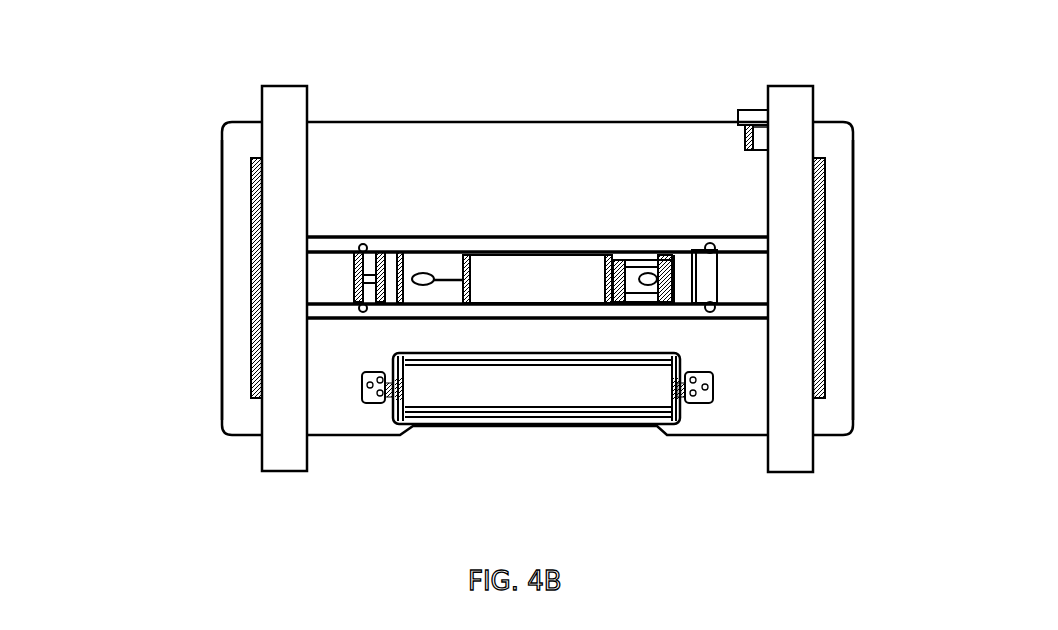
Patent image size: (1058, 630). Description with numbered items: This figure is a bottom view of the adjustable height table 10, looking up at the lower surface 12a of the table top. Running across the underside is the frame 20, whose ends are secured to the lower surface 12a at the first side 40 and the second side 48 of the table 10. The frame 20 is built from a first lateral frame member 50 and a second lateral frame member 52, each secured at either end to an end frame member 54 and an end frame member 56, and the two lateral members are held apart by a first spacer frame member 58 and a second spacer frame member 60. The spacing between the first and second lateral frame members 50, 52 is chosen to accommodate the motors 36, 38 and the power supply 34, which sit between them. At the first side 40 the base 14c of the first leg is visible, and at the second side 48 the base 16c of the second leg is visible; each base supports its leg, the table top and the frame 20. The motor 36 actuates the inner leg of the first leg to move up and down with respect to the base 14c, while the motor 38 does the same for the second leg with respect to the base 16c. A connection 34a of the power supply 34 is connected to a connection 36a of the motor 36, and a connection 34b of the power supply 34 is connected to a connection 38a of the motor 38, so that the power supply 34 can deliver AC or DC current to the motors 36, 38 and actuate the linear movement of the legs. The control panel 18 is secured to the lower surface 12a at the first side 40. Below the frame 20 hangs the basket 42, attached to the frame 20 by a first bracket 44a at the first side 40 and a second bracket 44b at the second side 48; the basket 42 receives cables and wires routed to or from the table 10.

The table 10 is at (536, 274).
The lower surface of the table top 12a is at (610, 158).
The base of the first leg 14c is at (797, 99).
The base of the second leg 16c is at (285, 105).
The control panel 18 is at (761, 118).
The frame 20 is at (485, 228).
The power supply 34 is at (515, 281).
The connection of the power supply 34a is at (637, 280).
The connection of the power supply 34b is at (455, 281).
The motor 36 is at (735, 277).
The connection of the motor 36a is at (667, 292).
The motor 38 is at (335, 273).
The connection of the motor 38a is at (412, 282).
The first side of the table 40 is at (888, 265).
The basket 42 is at (567, 382).
The first bracket 44a is at (700, 393).
The second bracket 44b is at (378, 397).
The second side of the table 48 is at (172, 260).
The first lateral frame member 50 is at (557, 245).
The second lateral frame member 52 is at (747, 318).
The end frame member 54 is at (813, 353).
The end frame member 56 is at (257, 190).
The first spacer frame member 58 is at (687, 273).
The second spacer frame member 60 is at (397, 265).